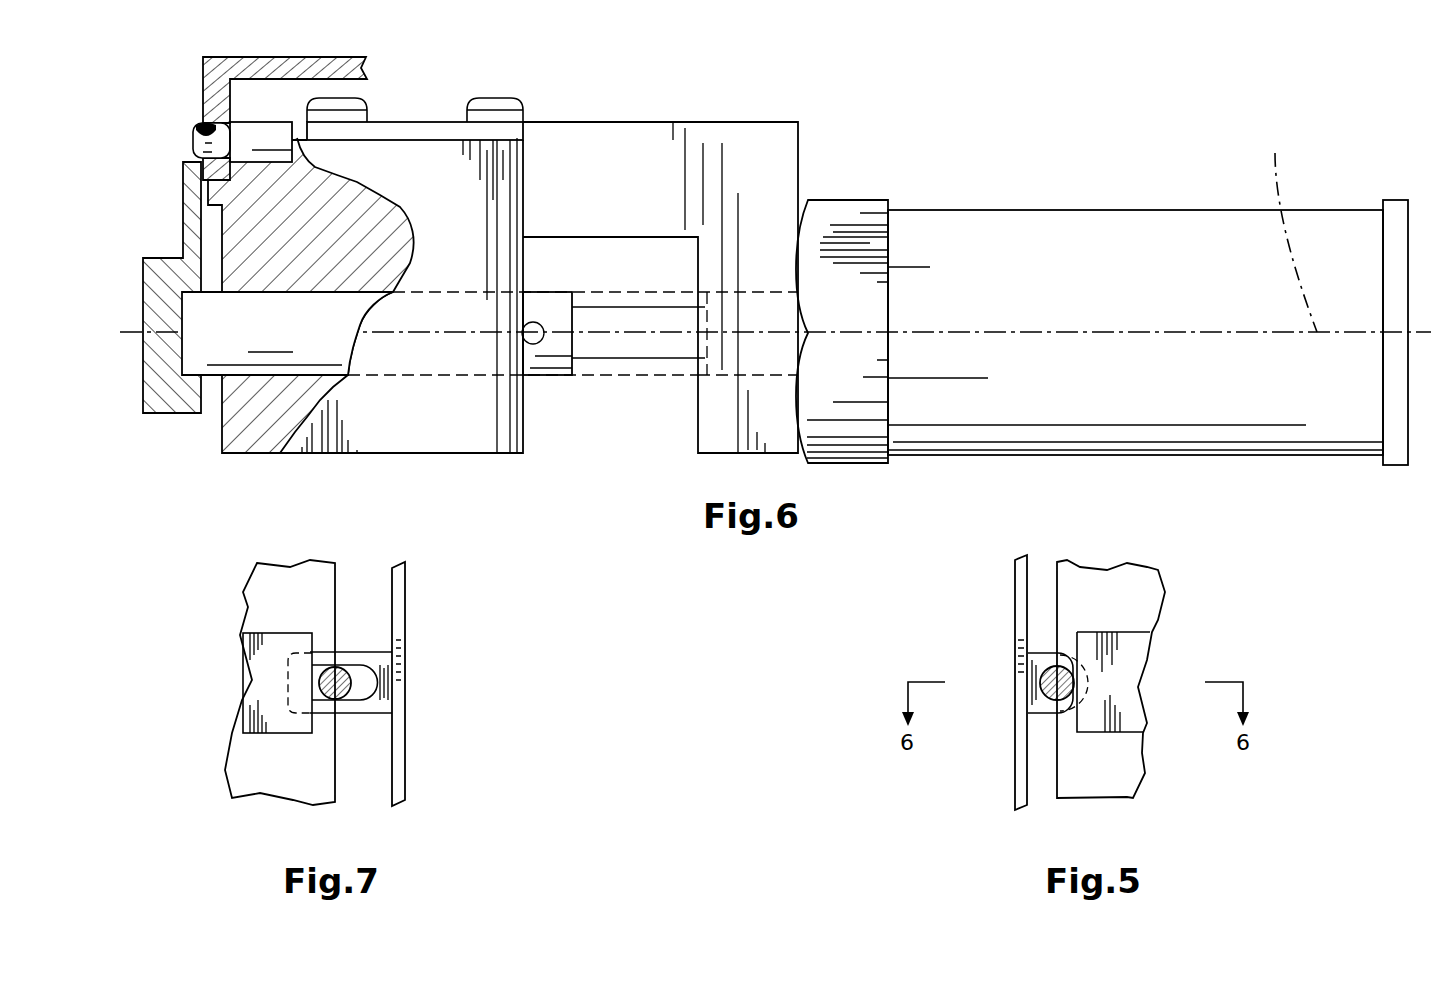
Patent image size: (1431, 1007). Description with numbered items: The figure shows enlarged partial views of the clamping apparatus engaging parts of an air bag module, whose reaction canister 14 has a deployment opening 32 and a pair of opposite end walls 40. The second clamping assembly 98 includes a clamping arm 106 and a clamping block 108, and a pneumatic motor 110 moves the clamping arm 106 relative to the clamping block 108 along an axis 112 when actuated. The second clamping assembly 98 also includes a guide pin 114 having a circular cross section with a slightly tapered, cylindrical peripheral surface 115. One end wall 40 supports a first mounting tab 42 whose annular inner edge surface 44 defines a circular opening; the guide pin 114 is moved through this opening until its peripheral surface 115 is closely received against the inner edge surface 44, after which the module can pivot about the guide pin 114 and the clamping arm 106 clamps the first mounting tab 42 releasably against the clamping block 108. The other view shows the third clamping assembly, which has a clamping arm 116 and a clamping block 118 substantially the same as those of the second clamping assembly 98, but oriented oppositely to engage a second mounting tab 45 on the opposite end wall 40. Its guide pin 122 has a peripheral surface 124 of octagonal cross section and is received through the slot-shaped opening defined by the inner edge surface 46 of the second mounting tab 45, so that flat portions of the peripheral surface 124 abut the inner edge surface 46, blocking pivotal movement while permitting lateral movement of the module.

In FIG. 7, the reaction canister 14 is at (380, 739).
In FIG. 5, the reaction canister 14 is at (1040, 749).
In FIG. 7, the deployment opening 32 is at (397, 781).
In FIG. 5, the deployment opening 32 is at (1015, 777).
In FIG. 6, the end wall 40 is at (333, 60).
In FIG. 7, the end wall 40 is at (407, 600).
In FIG. 5, the end wall 40 is at (1017, 607).
In FIG. 6, the first mounting tab 42 is at (219, 102).
In FIG. 5, the first mounting tab 42 is at (1040, 660).
In FIG. 6, the inner edge surface 44 is at (200, 130).
In FIG. 5, the inner edge surface 44 is at (1043, 680).
In FIG. 7, the second mounting tab 45 is at (373, 654).
In FIG. 7, the inner edge surface 46 is at (378, 683).
In FIG. 6, the second clamping assembly 98 is at (124, 452).
In FIG. 6, the clamping arm 106 is at (182, 203).
In FIG. 5, the clamping arm 106 is at (1133, 640).
In FIG. 6, the clamping block 108 is at (408, 155).
In FIG. 5, the clamping block 108 is at (1125, 586).
In FIG. 6, the pneumatic motor 110 is at (998, 230).
In FIG. 6, the axis 112 is at (1286, 230).
In FIG. 6, the guide pin 114 is at (183, 148).
In FIG. 5, the guide pin 114 is at (1088, 683).
In FIG. 6, the peripheral surface 115 is at (193, 139).
In FIG. 5, the peripheral surface 115 is at (1073, 698).
In FIG. 7, the clamping arm 116 is at (292, 640).
In FIG. 7, the clamping block 118 is at (298, 578).
In FIG. 7, the guide pin 122 is at (316, 675).
In FIG. 7, the peripheral surface 124 is at (326, 702).